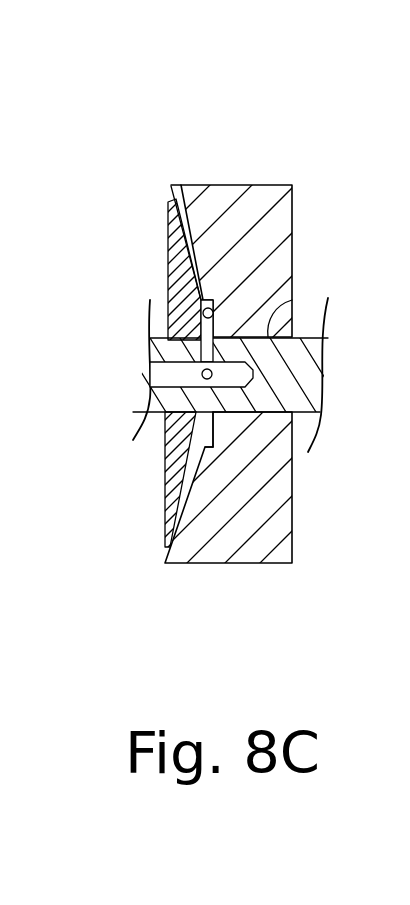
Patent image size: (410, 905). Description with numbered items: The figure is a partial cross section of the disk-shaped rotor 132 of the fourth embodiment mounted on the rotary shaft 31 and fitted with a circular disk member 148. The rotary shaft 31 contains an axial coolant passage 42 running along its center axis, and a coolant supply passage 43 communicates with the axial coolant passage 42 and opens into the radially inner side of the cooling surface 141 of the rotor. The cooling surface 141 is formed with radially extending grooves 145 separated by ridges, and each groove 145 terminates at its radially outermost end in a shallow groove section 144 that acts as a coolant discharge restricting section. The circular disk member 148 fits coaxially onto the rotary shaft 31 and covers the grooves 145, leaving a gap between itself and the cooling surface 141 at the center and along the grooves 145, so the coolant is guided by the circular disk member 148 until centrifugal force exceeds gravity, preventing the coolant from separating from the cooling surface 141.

The disk-shaped rotor 132 is at (235, 161).
The shallow groove section 144 is at (171, 187).
The groove 145 is at (168, 233).
The cooling surface 141 is at (214, 301).
The coolant supply passage 43 is at (292, 300).
The rotary shaft 31 is at (300, 392).
The axial coolant passage 42 is at (160, 373).
The circular disk member 148 is at (166, 456).